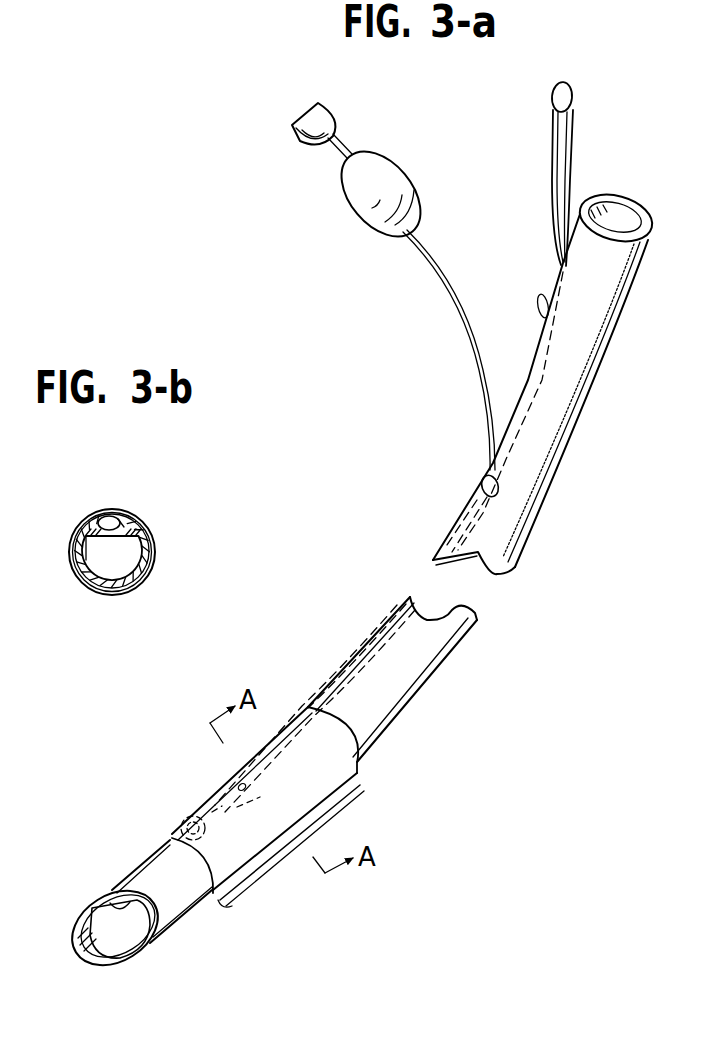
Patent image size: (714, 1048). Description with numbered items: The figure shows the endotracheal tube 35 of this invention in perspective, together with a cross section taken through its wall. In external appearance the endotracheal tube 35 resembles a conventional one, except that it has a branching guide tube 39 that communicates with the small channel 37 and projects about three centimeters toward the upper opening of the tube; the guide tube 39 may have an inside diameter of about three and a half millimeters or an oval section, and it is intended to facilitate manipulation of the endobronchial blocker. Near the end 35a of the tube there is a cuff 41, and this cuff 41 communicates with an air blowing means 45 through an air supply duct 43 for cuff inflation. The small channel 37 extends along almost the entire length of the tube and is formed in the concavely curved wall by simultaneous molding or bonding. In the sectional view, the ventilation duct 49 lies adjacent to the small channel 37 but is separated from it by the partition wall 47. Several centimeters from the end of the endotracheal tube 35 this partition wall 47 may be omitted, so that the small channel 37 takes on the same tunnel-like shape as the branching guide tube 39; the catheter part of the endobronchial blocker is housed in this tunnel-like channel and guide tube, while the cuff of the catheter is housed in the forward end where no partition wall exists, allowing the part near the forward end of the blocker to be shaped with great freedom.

In FIG. 3-a, the endotracheal tube 35 is at (533, 477).
In FIG. 3-a, the end of the tube 35a is at (143, 877).
In FIG. 3-a, the small channel 37 is at (190, 810).
In FIG. 3-b, the small channel 37 is at (110, 514).
In FIG. 3-a, the branching guide tube 39 is at (567, 133).
In FIG. 3-a, the cuff 41 is at (268, 807).
In FIG. 3-b, the cuff 41 is at (156, 552).
In FIG. 3-a, the air supply duct 43 is at (378, 628).
In FIG. 3-b, the air supply duct 43 is at (125, 527).
In FIG. 3-a, the air blowing means 45 is at (393, 170).
In FIG. 3-b, the partition wall 47 is at (93, 551).
In FIG. 3-b, the ventilation duct 49 is at (111, 571).